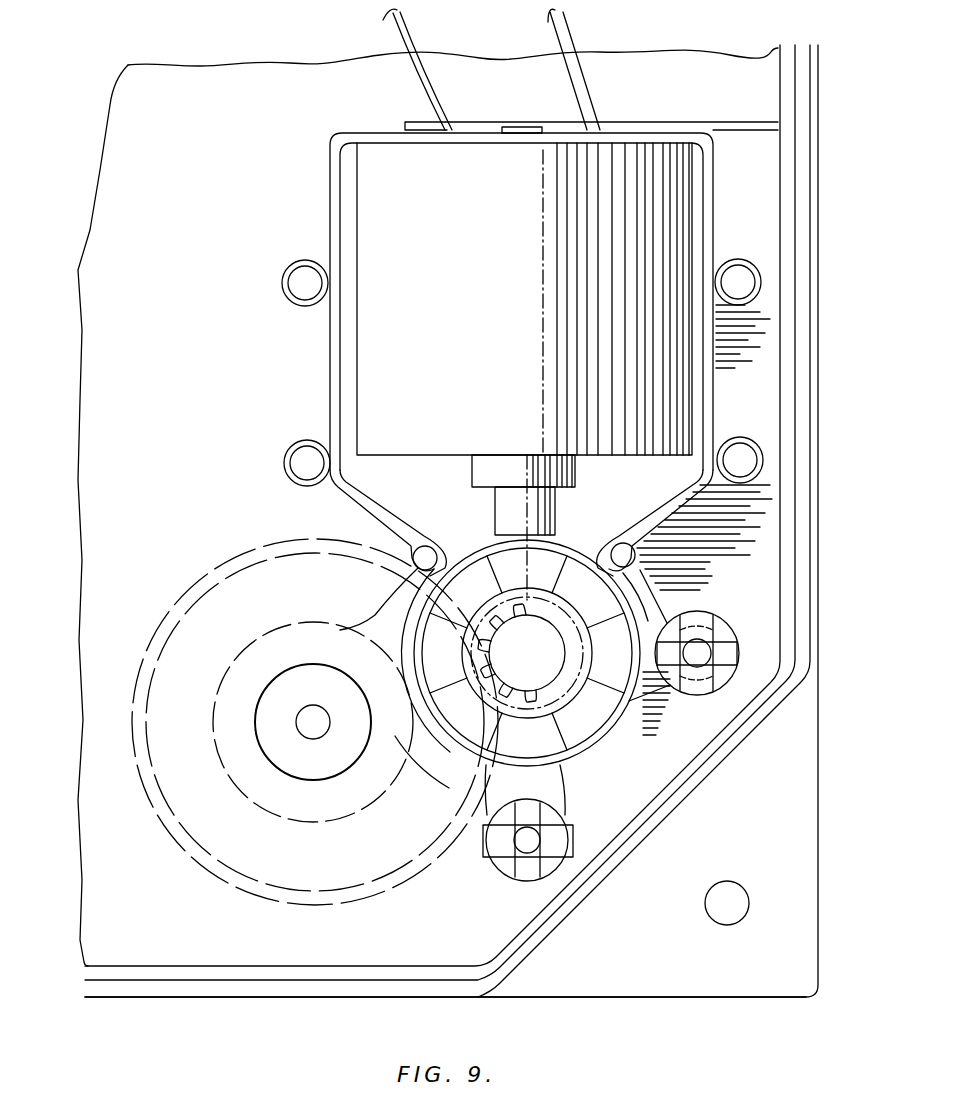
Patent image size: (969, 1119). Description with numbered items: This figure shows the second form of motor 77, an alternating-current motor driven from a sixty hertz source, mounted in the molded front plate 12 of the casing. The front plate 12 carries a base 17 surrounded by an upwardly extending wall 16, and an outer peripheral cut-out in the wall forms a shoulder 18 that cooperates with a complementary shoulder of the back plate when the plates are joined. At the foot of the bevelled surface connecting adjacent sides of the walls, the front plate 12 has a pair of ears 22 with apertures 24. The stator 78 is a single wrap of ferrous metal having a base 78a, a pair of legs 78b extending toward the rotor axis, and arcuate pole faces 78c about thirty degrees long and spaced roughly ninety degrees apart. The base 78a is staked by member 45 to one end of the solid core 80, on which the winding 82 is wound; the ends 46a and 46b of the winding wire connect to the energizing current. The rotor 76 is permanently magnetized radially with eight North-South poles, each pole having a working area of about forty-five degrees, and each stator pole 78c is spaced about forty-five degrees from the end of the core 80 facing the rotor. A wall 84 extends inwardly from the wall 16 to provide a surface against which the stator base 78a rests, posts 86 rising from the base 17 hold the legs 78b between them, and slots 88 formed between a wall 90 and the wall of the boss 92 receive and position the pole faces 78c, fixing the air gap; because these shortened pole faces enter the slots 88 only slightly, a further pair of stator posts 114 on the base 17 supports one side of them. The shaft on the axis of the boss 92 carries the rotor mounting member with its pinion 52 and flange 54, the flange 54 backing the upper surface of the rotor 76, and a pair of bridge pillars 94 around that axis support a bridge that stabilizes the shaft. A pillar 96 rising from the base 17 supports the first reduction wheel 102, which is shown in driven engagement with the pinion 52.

The front plate 12 is at (146, 1003).
The wall 16 is at (208, 972).
The base 17 is at (198, 431).
The shoulder 18 is at (257, 990).
The ears 22 is at (797, 908).
The apertures 24 is at (735, 888).
The staking member 45 is at (527, 133).
The wire end 46a is at (445, 118).
The wire end 46b is at (583, 100).
The pinion 52 is at (543, 657).
The flange 54 is at (597, 627).
The rotor 76 is at (560, 557).
The motor 77 is at (305, 185).
The stator 78 is at (712, 207).
The stator base 78a is at (650, 143).
The stator legs 78b is at (330, 355).
The stator pole faces 78c is at (425, 578).
The core 80 is at (565, 478).
The winding 82 is at (447, 428).
The wall 84 is at (423, 125).
The posts 86 is at (297, 272).
The slots 88 is at (612, 740).
The wall 90 is at (555, 795).
The boss 92 is at (490, 543).
The bridge pillars 94 is at (712, 640).
The pillar 96 is at (305, 722).
The first reduction wheel 102 is at (240, 845).
The stator posts 114 is at (425, 556).